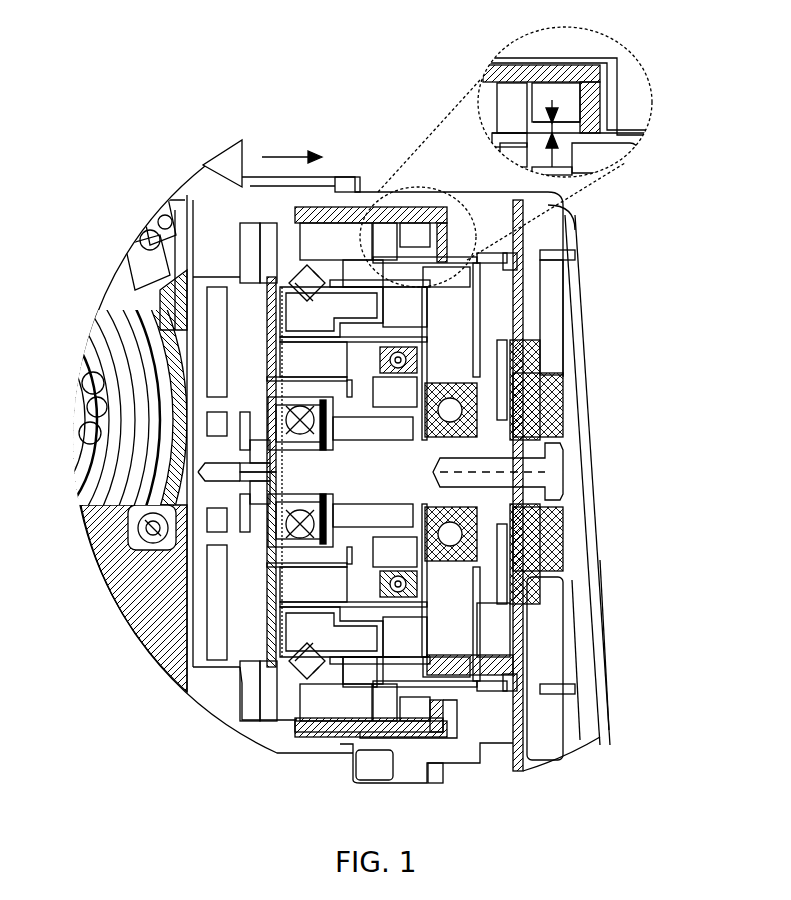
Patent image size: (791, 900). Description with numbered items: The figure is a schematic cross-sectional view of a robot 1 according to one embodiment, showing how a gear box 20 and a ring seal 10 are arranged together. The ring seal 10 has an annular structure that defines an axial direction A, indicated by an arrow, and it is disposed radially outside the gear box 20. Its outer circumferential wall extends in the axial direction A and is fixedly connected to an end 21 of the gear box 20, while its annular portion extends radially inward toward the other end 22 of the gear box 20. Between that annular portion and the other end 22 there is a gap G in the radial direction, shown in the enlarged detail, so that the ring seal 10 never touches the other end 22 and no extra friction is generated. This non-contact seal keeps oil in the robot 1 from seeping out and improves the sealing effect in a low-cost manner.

The robot 1 is at (265, 142).
The ring seal 10 is at (402, 212).
The gear box 20 is at (333, 243).
The end of the gear box 21 is at (268, 205).
The other end of the gear box 22 is at (553, 254).
The axial direction A is at (292, 147).
The gap G is at (557, 131).